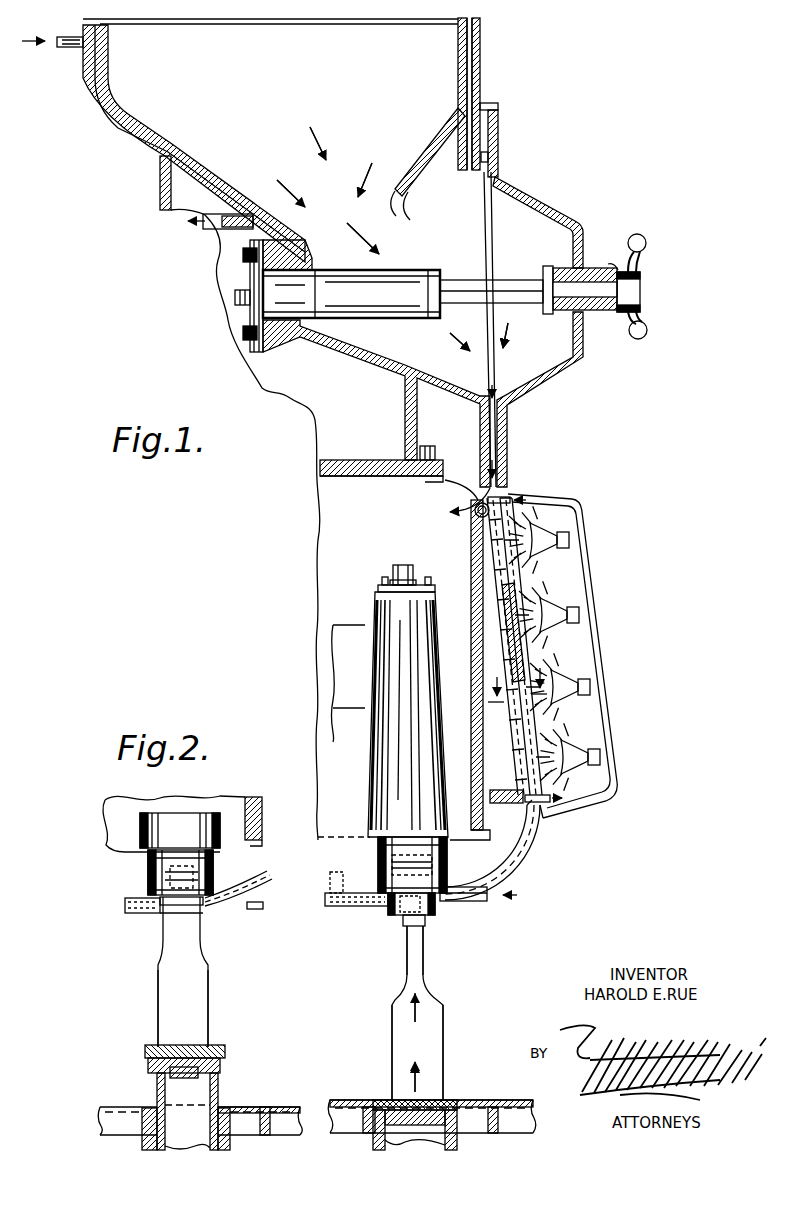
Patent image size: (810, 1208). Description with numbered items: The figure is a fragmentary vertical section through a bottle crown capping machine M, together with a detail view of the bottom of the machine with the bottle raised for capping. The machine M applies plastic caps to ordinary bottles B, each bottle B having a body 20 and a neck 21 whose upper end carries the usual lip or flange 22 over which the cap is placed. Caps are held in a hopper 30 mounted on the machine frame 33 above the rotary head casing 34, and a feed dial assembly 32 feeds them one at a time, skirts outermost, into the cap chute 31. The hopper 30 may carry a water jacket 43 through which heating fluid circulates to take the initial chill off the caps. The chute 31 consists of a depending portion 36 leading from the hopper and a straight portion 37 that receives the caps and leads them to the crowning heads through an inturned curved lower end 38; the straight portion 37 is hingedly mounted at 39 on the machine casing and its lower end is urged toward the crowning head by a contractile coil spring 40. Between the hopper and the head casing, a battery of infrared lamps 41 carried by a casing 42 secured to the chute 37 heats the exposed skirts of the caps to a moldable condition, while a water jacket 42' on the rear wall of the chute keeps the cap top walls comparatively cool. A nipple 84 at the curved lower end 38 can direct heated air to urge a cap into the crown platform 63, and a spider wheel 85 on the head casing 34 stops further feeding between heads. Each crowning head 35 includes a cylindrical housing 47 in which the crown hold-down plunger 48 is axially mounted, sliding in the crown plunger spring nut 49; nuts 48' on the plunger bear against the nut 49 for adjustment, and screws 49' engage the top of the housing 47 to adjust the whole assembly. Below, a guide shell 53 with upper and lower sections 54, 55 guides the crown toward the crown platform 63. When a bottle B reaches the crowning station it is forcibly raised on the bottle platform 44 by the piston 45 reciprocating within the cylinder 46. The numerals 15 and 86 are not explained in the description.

In FIG. 1, the rays 15 is at (517, 693).
In FIG. 1, the body 20 is at (438, 1036).
In FIG. 2, the body 20 is at (205, 1008).
In FIG. 1, the neck 21 is at (423, 942).
In FIG. 1, the lip or flange 22 is at (425, 921).
In FIG. 1, the hopper 30 is at (481, 62).
In FIG. 1, the cap chute 31 is at (490, 477).
In FIG. 1, the feed dial assembly 32 is at (546, 193).
In FIG. 1, the machine frame 33 is at (366, 440).
In FIG. 2, the machine frame 33 is at (252, 798).
In FIG. 1, the rotary head casing 34 is at (360, 647).
In FIG. 2, the rotary head casing 34 is at (114, 812).
In FIG. 1, the crowning head 35 is at (365, 709).
In FIG. 2, the crowning head 35 is at (186, 822).
In FIG. 1, the depending portion 36 is at (482, 460).
In FIG. 1, the straight portion 37 is at (522, 498).
In FIG. 1, the inturned curved lower end 38 is at (522, 870).
In FIG. 2, the inturned curved lower end 38 is at (262, 882).
In FIG. 1, the hinge 39 is at (480, 514).
In FIG. 1, the contractile coil spring 40 is at (502, 792).
In FIG. 1, the infrared lamps 41 is at (588, 598).
In FIG. 1, the casing 42 is at (577, 656).
In FIG. 1, the water jacket 42' is at (492, 646).
In FIG. 1, the water jacket 43 is at (92, 97).
In FIG. 1, the bottle platform 44 is at (451, 1099).
In FIG. 2, the bottle platform 44 is at (226, 1049).
In FIG. 1, the piston 45 is at (450, 1133).
In FIG. 2, the piston 45 is at (220, 1086).
In FIG. 2, the cylinder 46 is at (150, 1110).
In FIG. 1, the cylindrical housing 47 is at (436, 650).
In FIG. 2, the cylindrical housing 47 is at (142, 857).
In FIG. 1, the crown hold-down plunger 48 is at (396, 560).
In FIG. 1, the nuts 48' is at (423, 568).
In FIG. 1, the crown plunger spring nut 49 is at (384, 585).
In FIG. 1, the screws 49' is at (393, 565).
In FIG. 1, the guide shell 53 is at (450, 848).
In FIG. 2, the guide shell 53 is at (212, 864).
In FIG. 1, the upper section 54 is at (380, 855).
In FIG. 2, the upper section 54 is at (150, 873).
In FIG. 1, the lower section 55 is at (437, 868).
In FIG. 2, the lower section 55 is at (162, 883).
In FIG. 1, the crown platform 63 is at (400, 915).
In FIG. 1, the nipple 84 is at (478, 906).
In FIG. 2, the nipple 84 is at (258, 909).
In FIG. 1, the spider wheel 85 is at (362, 906).
In FIG. 2, the spider wheel 85 is at (142, 914).
In FIG. 1, the opening 86 is at (328, 880).
In FIG. 1, the bottle B is at (434, 1003).
In FIG. 2, the bottle B is at (197, 992).
In FIG. 1, the crowning machine M is at (503, 470).